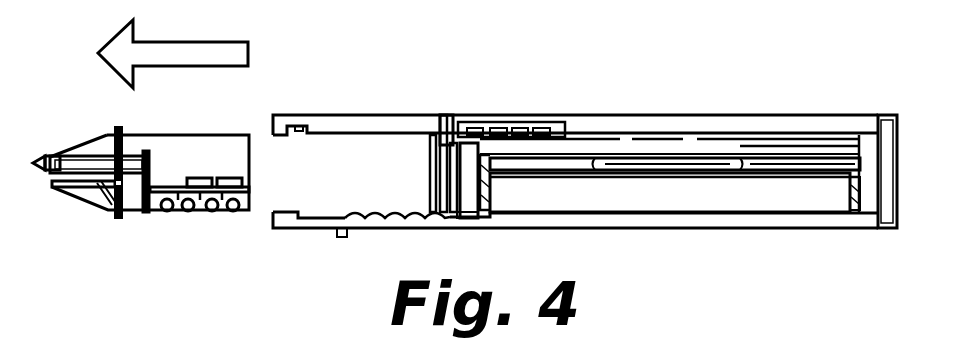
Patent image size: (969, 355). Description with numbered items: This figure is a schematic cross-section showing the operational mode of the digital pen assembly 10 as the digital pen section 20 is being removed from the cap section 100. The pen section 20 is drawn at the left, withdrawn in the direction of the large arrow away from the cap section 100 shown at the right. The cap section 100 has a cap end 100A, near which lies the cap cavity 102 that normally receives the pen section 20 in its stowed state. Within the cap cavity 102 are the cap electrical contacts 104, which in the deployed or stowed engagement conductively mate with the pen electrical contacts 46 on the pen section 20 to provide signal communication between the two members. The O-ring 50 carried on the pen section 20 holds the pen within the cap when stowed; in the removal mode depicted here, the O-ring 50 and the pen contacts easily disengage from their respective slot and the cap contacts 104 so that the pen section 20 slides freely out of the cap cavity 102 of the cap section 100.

The digital pen assembly 10 is at (625, 74).
The digital pen section 20 is at (178, 150).
The pen electrical contacts 46 is at (215, 215).
The O-ring 50 is at (118, 218).
The cap section 100 is at (818, 125).
The cap end 100A is at (282, 123).
The cap cavity 102 is at (278, 138).
The cap electrical contacts 104 is at (343, 212).